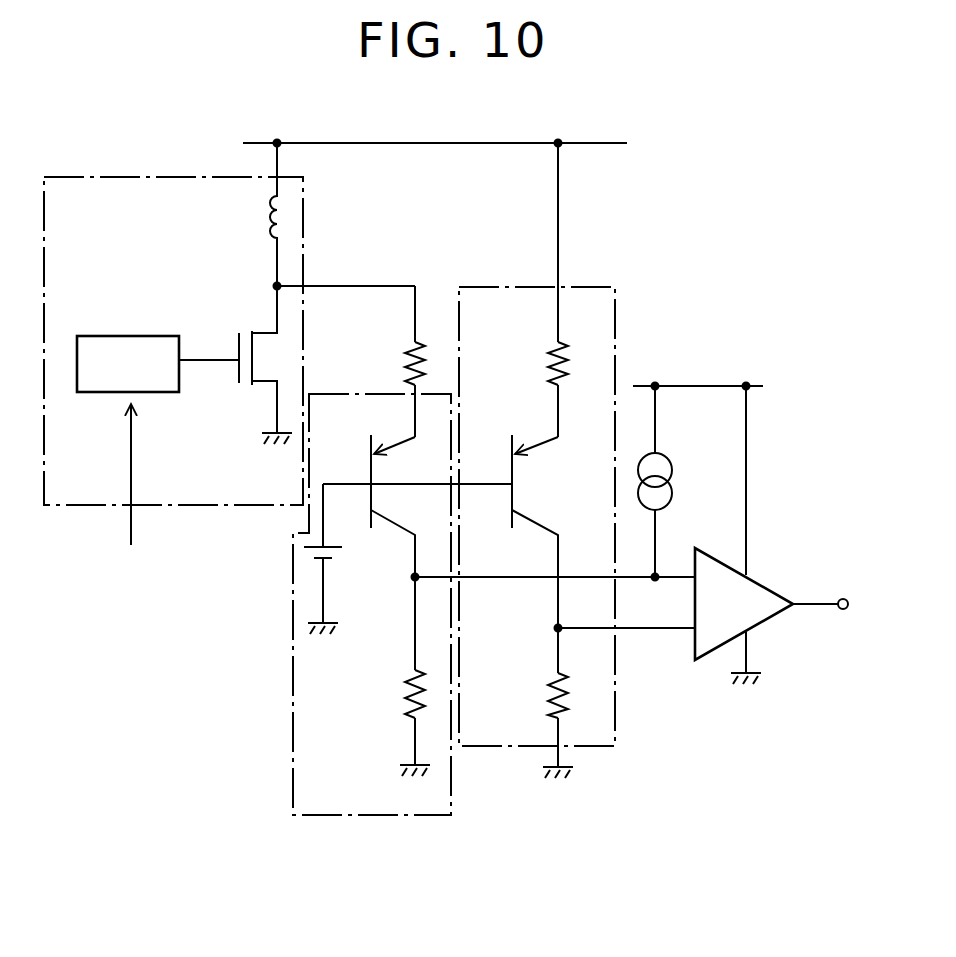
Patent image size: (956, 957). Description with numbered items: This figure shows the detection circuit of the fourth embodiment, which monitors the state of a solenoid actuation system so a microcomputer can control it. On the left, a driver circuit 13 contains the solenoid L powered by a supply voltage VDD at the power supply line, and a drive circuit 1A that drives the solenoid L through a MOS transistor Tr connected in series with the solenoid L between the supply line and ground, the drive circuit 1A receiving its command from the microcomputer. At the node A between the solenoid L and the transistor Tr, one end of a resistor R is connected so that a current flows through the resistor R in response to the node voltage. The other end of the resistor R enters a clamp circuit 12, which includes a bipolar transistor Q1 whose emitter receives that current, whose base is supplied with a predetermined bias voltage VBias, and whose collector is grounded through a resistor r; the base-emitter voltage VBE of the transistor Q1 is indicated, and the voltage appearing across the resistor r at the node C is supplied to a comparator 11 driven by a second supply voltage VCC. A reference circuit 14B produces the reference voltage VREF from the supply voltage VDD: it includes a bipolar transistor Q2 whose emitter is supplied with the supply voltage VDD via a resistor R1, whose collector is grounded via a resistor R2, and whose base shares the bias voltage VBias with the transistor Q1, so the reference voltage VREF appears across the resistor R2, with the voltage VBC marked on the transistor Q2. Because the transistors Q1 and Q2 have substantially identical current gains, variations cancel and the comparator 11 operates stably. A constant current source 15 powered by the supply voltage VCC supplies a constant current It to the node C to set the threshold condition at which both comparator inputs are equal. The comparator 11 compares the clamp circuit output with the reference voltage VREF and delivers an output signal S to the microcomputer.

The drive circuit 1A is at (160, 336).
The MOS transistor Tr is at (242, 387).
The solenoid L is at (289, 231).
The node A is at (333, 286).
The driver circuit 13 is at (70, 507).
The clamp circuit 12 is at (291, 655).
The reference circuit 14B is at (578, 287).
The resistor R is at (401, 361).
The resistor R1 is at (545, 290).
The resistor R2 is at (602, 702).
The resistor r is at (402, 676).
The bipolar transistor Q1 is at (388, 500).
The bipolar transistor Q2 is at (532, 497).
The base-emitter voltage VBE is at (385, 420).
The base-collector voltage VBC is at (530, 418).
The bias voltage VBias is at (285, 559).
The node C is at (543, 578).
The reference voltage VREF is at (567, 633).
The constant current source 15 is at (671, 452).
The constant current It is at (683, 457).
The comparator 11 is at (752, 580).
The output signal S is at (818, 609).
The supply voltage VDD is at (459, 144).
The second supply voltage VCC is at (721, 387).